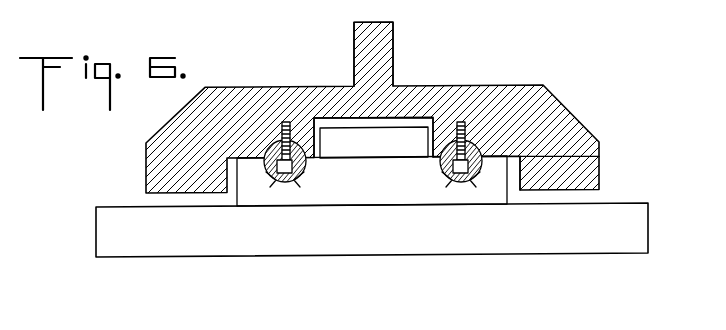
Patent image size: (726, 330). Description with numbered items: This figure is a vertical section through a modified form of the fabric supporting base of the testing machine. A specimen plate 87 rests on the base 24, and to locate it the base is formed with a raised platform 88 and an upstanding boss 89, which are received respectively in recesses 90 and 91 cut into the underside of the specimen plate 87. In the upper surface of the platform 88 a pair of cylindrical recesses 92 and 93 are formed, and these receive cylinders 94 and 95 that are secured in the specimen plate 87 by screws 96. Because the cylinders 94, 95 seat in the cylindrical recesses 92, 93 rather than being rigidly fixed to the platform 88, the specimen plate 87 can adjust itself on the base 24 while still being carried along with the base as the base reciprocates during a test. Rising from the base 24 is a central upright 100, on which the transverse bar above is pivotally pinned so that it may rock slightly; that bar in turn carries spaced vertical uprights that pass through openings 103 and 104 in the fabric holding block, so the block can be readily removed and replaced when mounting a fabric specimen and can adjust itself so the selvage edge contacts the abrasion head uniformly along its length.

The base 24 is at (630, 232).
The specimen plate 87 is at (562, 118).
The raised platform 88 is at (387, 193).
The upstanding boss 89 is at (424, 117).
The recess 90 is at (513, 169).
The recess 91 is at (413, 120).
The cylindrical recess 92 is at (300, 178).
The cylindrical recess 93 is at (440, 168).
The cylinder 94 is at (314, 150).
The cylinder 95 is at (443, 147).
The screw 96 is at (279, 173).
The central upright 100 is at (380, 30).
The opening 103 is at (266, 324).
The opening 104 is at (447, 324).